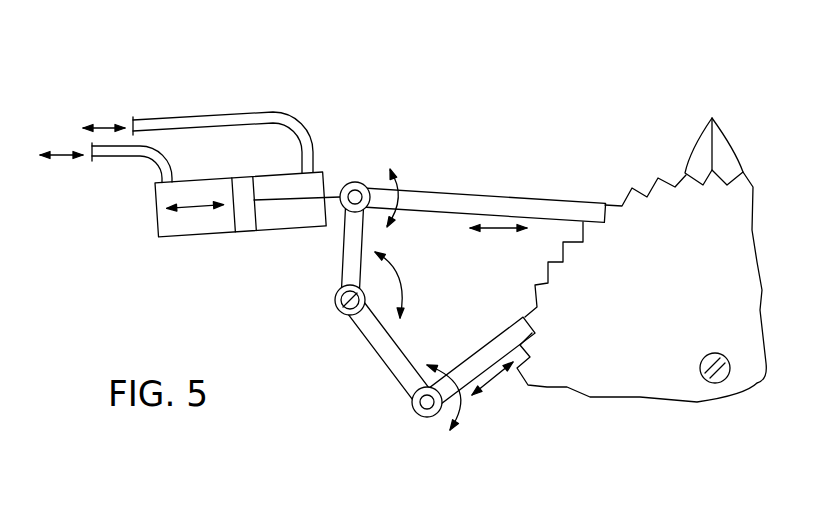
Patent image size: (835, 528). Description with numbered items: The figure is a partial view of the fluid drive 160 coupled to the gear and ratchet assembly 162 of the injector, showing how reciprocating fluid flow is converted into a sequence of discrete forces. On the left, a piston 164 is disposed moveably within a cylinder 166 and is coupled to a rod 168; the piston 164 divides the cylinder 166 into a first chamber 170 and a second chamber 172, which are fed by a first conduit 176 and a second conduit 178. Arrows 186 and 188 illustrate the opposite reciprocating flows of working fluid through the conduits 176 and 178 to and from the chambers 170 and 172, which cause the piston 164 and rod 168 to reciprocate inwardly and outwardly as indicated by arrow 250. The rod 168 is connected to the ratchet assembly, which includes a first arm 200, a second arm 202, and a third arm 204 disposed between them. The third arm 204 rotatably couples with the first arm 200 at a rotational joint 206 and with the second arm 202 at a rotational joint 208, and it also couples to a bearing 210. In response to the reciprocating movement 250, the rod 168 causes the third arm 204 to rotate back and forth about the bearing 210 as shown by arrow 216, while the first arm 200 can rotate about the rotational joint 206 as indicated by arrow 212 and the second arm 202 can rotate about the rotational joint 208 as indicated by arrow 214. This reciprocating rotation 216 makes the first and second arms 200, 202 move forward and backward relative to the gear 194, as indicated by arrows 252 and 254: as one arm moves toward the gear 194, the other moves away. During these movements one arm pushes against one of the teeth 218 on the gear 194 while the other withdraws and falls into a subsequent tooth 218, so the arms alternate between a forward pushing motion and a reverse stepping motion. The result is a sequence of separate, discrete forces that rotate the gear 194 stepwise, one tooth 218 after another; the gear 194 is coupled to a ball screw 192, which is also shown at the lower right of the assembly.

The fluid drive 160 is at (155, 66).
The gear and ratchet assembly 162 is at (651, 82).
The piston 164 is at (243, 231).
The cylinder 166 is at (150, 227).
The rod 168 is at (300, 203).
The first chamber 170 is at (197, 180).
The second chamber 172 is at (277, 175).
The first conduit 176 is at (113, 157).
The second conduit 178 is at (201, 116).
The arrow 186 is at (67, 158).
The arrow 188 is at (102, 126).
The ball screw 192 is at (703, 385).
The gear 194 is at (753, 204).
The first arm 200 is at (487, 195).
The second arm 202 is at (497, 335).
The third arm 204 is at (383, 363).
The rotational joint 206 is at (357, 183).
The rotational joint 208 is at (427, 418).
The bearing 210 is at (337, 306).
The arrow 212 is at (405, 194).
The arrow 214 is at (460, 412).
The arrow 216 is at (399, 280).
The teeth 218 is at (712, 118).
The arrow 250 is at (194, 209).
The arrow 252 is at (498, 229).
The arrow 254 is at (494, 381).